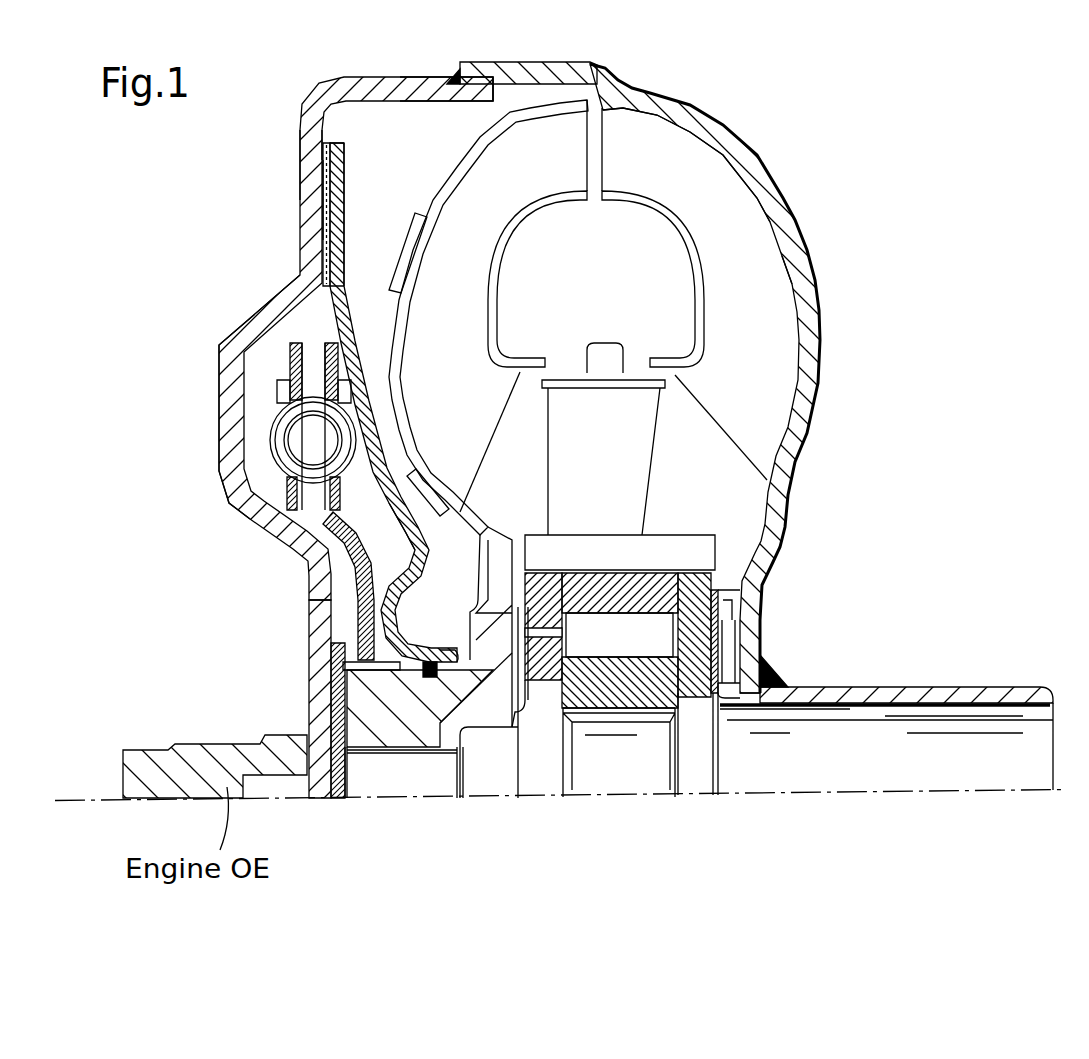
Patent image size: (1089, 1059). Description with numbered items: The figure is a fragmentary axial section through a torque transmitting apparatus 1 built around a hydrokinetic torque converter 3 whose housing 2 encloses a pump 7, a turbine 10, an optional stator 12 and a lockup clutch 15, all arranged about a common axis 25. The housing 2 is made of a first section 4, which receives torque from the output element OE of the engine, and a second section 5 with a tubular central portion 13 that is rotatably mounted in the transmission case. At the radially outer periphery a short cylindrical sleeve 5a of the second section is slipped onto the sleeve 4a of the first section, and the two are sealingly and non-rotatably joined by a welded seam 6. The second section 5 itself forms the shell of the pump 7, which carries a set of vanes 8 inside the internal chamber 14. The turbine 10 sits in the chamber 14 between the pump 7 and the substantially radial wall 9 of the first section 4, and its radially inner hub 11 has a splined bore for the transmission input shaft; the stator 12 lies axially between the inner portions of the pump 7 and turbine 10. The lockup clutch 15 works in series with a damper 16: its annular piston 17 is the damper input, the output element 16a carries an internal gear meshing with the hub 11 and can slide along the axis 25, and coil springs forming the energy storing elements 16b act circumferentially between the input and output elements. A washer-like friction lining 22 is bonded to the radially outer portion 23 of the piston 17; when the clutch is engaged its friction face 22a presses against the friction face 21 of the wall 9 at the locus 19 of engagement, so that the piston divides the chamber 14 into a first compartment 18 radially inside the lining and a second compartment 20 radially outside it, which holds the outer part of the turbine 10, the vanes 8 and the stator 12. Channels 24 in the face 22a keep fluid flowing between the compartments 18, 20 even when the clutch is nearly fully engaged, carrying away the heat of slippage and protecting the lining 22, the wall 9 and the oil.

The torque transmitting apparatus 1 is at (799, 156).
The housing 2 is at (367, 92).
The hydrokinetic torque converter 3 is at (740, 133).
The first section 4 is at (327, 687).
The sleeve 4a is at (393, 88).
The second section 5 is at (799, 253).
The cylindrical sleeve 5a is at (556, 62).
The welded seam 6 is at (455, 78).
The pump 7 is at (767, 302).
The vanes 8 is at (775, 325).
The wall 9 is at (237, 477).
The turbine 10 is at (470, 397).
The hub 11 is at (420, 730).
The stator 12 is at (627, 487).
The tubular central portion 13 is at (933, 693).
The internal chamber 14 is at (590, 82).
The lockup clutch 15 is at (298, 157).
The damper 16 is at (277, 478).
The output element 16a is at (327, 520).
The energy storing elements 16b is at (257, 493).
The annular piston 17 is at (413, 537).
The first compartment 18 is at (277, 343).
The locus of frictional engagement 19 is at (320, 188).
The second compartment 20 is at (437, 140).
The friction face 21 is at (320, 172).
The friction lining 22 is at (323, 248).
The friction face 22a is at (330, 192).
The radially outer portion 23 is at (324, 217).
The channels 24 is at (321, 157).
The axis 25 is at (410, 798).